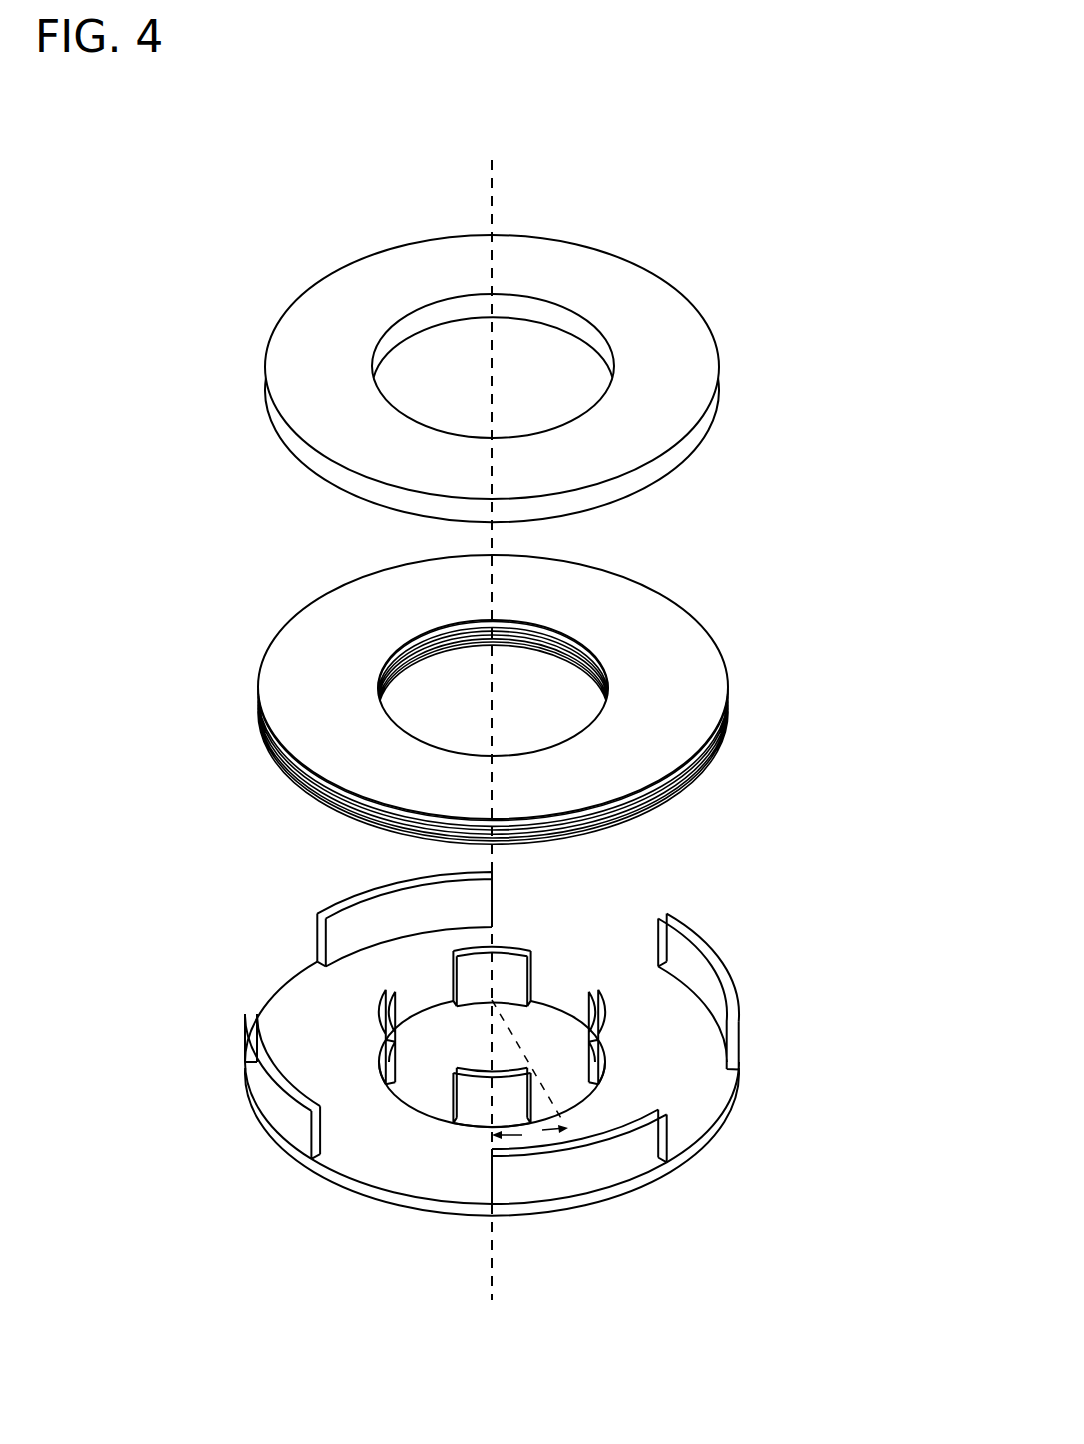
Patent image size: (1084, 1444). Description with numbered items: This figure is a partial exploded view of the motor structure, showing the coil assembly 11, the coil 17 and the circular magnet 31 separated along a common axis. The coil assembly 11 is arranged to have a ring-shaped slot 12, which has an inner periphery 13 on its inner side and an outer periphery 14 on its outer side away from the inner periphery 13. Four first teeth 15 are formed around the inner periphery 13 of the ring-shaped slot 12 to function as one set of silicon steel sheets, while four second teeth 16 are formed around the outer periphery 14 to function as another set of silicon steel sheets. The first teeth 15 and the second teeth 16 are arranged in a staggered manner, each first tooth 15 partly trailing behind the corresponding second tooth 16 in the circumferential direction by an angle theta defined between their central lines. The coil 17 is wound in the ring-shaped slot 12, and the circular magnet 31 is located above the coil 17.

The coil assembly 11 is at (567, 1029).
The ring-shaped slot 12 is at (613, 970).
The inner periphery 13 is at (430, 1008).
The outer periphery 14 is at (727, 1112).
The first teeth 15 is at (505, 952).
The second teeth 16 is at (730, 1003).
The coil 17 is at (673, 658).
The circular magnet 31 is at (690, 363).